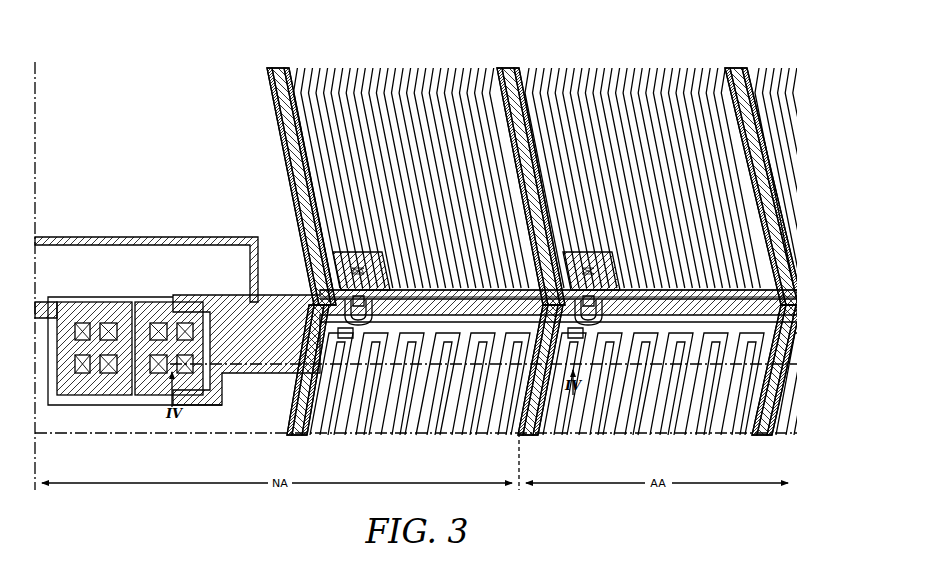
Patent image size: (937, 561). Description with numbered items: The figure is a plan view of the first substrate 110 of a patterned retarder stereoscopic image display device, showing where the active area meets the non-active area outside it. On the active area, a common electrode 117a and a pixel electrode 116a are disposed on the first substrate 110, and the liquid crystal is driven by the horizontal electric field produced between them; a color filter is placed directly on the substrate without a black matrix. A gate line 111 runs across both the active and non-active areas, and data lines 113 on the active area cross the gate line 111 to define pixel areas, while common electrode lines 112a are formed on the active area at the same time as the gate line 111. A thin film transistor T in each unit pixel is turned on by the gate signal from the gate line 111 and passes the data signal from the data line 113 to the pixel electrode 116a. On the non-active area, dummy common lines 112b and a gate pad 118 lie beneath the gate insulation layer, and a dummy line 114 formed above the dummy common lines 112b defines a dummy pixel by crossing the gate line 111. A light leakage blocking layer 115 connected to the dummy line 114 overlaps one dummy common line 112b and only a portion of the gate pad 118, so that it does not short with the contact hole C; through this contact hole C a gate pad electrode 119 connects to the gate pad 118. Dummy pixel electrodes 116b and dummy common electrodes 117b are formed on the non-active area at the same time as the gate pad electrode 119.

The first substrate 110 is at (416, 261).
The gate line 111 is at (441, 305).
The common electrode line 112a is at (519, 433).
The dummy common line 112b is at (293, 433).
The data line 113 is at (510, 68).
The dummy line 114 is at (280, 123).
The light leakage blocking layer 115 is at (260, 347).
The pixel electrode 116a is at (560, 68).
The dummy pixel electrode 116b is at (273, 80).
The common electrode 117a is at (607, 68).
The dummy common electrode 117b is at (313, 100).
The gate pad 118 is at (154, 397).
The gate pad electrode 119 is at (110, 400).
The contact hole C is at (158, 320).
The thin film transistor T is at (374, 318).